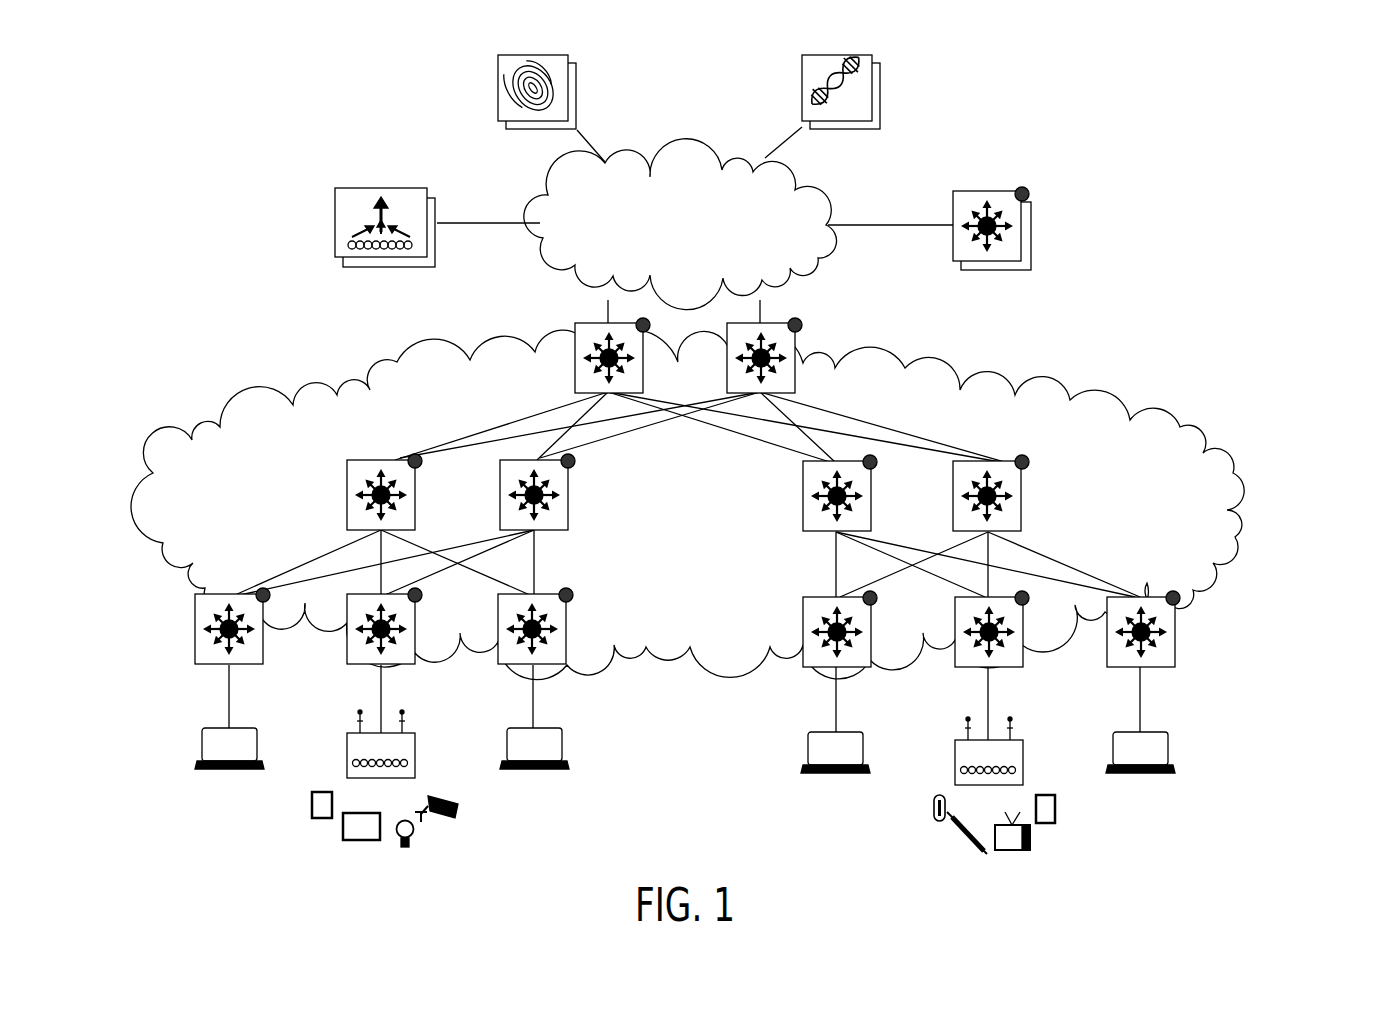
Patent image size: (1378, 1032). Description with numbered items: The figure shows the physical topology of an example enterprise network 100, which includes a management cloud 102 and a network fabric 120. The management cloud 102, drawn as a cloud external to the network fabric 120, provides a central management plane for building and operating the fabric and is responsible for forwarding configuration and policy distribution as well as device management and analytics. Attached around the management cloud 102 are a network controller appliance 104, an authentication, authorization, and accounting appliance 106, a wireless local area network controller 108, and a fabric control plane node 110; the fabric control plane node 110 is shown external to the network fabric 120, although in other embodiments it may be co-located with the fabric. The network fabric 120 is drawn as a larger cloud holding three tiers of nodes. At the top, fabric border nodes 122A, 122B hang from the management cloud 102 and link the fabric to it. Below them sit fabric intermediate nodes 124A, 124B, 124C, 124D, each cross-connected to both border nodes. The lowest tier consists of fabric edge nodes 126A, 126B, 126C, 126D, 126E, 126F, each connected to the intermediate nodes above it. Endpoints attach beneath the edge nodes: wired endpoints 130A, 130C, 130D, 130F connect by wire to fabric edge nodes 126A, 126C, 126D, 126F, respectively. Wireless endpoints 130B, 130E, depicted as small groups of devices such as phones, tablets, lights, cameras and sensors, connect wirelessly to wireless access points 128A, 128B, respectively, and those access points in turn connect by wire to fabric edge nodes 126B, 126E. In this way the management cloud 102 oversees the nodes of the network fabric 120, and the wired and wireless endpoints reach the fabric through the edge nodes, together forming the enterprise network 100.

The enterprise network 100 is at (1320, 170).
The management cloud 102 is at (680, 224).
The network controller appliance 104 is at (877, 130).
The authentication, authorization, and accounting (AAA) appliance 106 is at (507, 130).
The wireless local area network controller 108 is at (343, 267).
The fabric control plane node 110 is at (1031, 270).
The network fabric 120 is at (687, 504).
The fabric border node 122A is at (575, 322).
The fabric border node 122B is at (796, 322).
The fabric intermediate node 124A is at (347, 458).
The fabric intermediate node 124B is at (570, 532).
The fabric intermediate node 124C is at (803, 533).
The fabric intermediate node 124D is at (1028, 458).
The fabric edge node 126A is at (197, 664).
The fabric edge node 126B is at (347, 664).
The fabric edge node 126C is at (567, 665).
The fabric edge node 126D is at (803, 668).
The fabric edge node 126E is at (1022, 668).
The fabric edge node 126F is at (1173, 668).
The wireless access point 128A is at (415, 730).
The wireless access point 128B is at (953, 737).
The wired endpoint 130A is at (230, 772).
The wireless endpoints 130B is at (453, 840).
The wired endpoint 130C is at (562, 770).
The wired endpoint 130D is at (805, 774).
The wireless endpoints 130E is at (1060, 845).
The wired endpoint 130F is at (1140, 777).